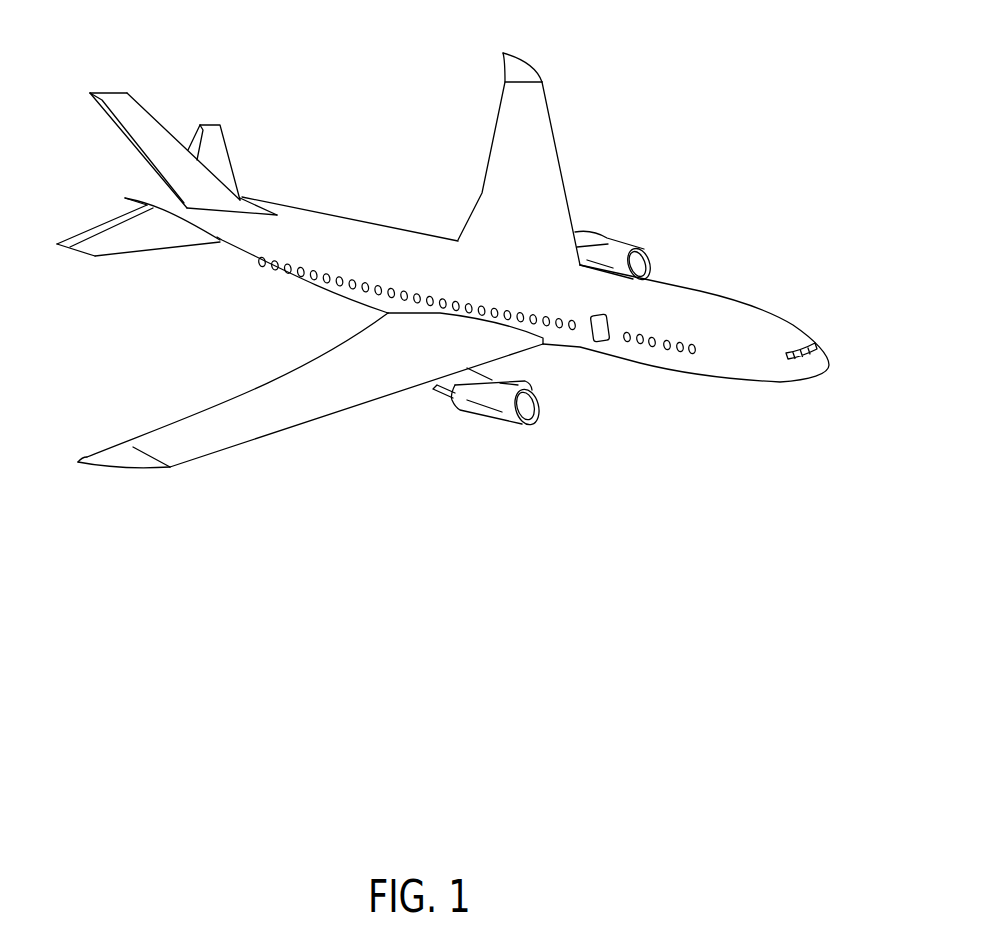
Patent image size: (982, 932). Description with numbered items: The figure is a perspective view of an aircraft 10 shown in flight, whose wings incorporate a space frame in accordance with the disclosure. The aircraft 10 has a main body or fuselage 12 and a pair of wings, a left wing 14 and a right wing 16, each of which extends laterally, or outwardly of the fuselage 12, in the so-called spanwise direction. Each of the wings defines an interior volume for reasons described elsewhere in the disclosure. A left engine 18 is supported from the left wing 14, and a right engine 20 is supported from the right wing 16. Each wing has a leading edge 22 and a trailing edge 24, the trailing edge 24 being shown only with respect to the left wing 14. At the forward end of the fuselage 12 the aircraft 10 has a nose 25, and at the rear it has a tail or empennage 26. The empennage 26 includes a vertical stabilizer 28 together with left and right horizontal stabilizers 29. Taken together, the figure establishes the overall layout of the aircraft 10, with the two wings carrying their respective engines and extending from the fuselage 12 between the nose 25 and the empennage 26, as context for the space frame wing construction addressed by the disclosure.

The aircraft 10 is at (757, 65).
The fuselage 12 is at (620, 357).
The left wing 14 is at (547, 120).
The right wing 16 is at (255, 433).
The left engine 18 is at (628, 243).
The right engine 20 is at (490, 418).
The leading edge 22 is at (555, 167).
The trailing edge 24 is at (492, 138).
The nose 25 is at (827, 365).
The tail or empennage 26 is at (222, 247).
The vertical stabilizer 28 is at (140, 128).
The horizontal stabilizers 29 is at (225, 163).